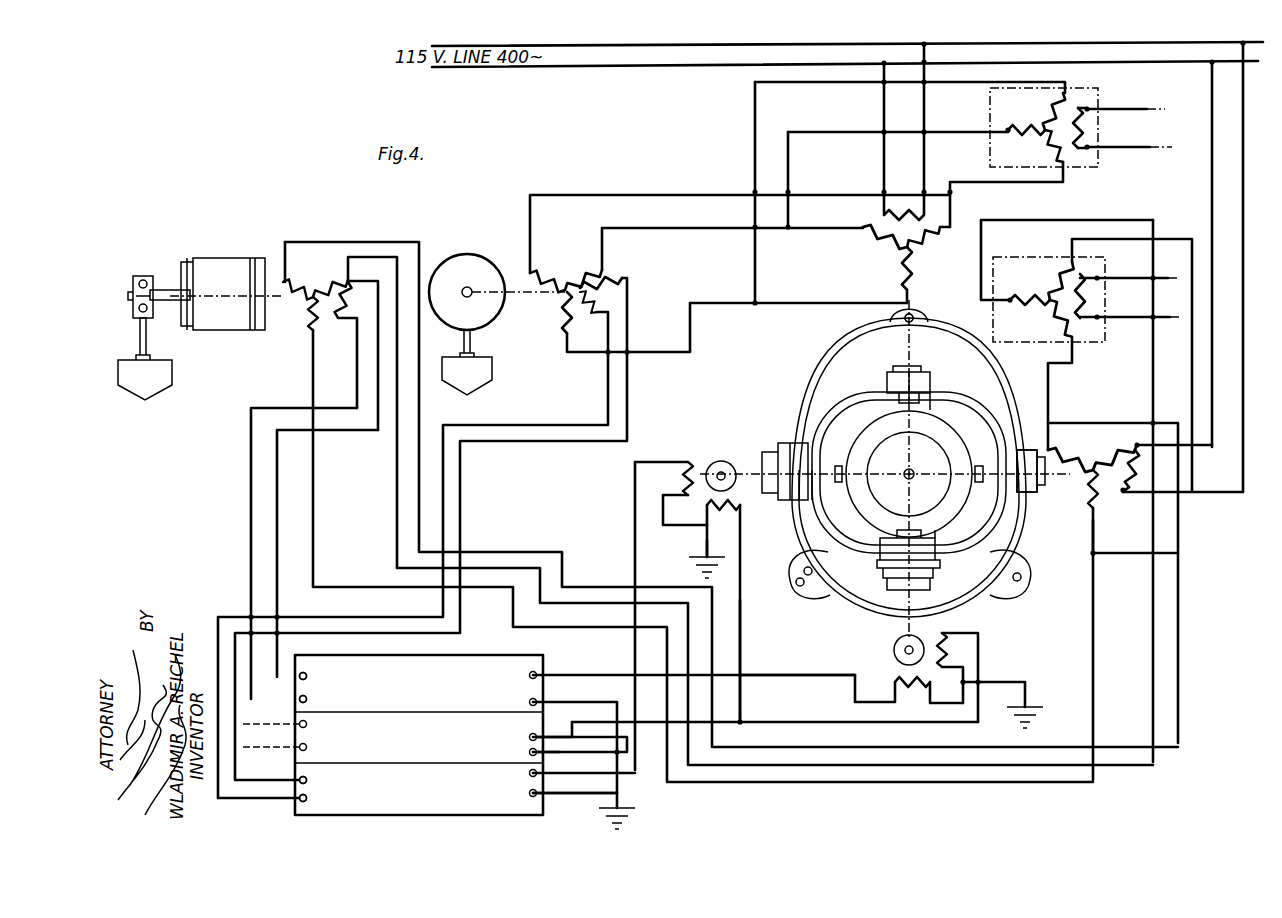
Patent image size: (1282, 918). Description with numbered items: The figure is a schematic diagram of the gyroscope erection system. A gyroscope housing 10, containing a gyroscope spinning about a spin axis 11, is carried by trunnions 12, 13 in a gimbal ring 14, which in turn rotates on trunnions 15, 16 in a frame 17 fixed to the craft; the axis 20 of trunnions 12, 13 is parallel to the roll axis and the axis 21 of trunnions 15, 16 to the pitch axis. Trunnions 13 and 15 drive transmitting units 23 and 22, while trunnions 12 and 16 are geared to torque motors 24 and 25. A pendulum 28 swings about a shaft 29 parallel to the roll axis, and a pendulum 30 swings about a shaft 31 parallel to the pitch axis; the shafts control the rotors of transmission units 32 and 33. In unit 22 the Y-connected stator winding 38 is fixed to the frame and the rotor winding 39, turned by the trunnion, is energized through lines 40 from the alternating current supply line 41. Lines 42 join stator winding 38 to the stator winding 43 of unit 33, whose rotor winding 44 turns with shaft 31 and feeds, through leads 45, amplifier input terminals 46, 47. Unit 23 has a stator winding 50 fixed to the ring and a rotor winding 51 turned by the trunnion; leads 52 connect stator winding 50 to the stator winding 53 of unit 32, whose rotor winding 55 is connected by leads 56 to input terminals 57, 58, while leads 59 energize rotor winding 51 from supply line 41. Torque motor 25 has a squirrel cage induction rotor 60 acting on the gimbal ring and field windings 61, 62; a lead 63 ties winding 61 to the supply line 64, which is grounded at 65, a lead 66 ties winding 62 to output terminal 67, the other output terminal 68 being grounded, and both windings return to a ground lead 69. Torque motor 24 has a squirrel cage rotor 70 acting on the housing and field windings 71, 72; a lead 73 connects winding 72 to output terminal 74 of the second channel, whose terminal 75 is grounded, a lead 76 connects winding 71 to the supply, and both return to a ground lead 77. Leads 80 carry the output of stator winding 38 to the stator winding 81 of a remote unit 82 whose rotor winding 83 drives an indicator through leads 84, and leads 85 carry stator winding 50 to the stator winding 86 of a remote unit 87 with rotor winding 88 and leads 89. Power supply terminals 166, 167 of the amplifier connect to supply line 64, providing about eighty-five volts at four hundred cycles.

The gyroscope housing 10 is at (962, 448).
The spin axis 11 is at (912, 470).
The trunnion 12 is at (930, 535).
The trunnion 13 is at (930, 410).
The gimbal ring 14 is at (858, 392).
The trunnion 15 is at (1022, 490).
The trunnion 16 is at (803, 505).
The frame 17 is at (850, 605).
The axis 20 is at (915, 335).
The axis 21 is at (1077, 537).
The transmitting unit 22 is at (1028, 458).
The transmitting unit 23 is at (897, 372).
The torque motor 24 is at (940, 572).
The torque motor 25 is at (812, 458).
The pendulum 28 is at (492, 372).
The shaft 29 is at (470, 288).
The pendulum 30 is at (165, 372).
The shaft 31 is at (155, 288).
The transmission unit 32 is at (487, 312).
The transmission unit 33 is at (217, 273).
The stator winding 38 is at (1090, 455).
The rotor winding 39 is at (1135, 485).
The lines 40 is at (1212, 418).
The alternating current supply line 41 is at (628, 50).
The lines 42 is at (418, 463).
The stator winding 43 is at (300, 308).
The rotor winding 44 is at (338, 322).
The leads 45 is at (277, 497).
The input terminal 46 is at (308, 676).
The input terminal 47 is at (308, 699).
The stator winding 50 is at (870, 248).
The rotor winding 51 is at (905, 220).
The leads 52 is at (712, 303).
The stator winding 53 is at (549, 270).
The rotor winding 55 is at (605, 305).
The leads 56 is at (540, 427).
The input terminal 57 is at (308, 780).
The input terminal 58 is at (308, 798).
The leads 59 is at (910, 118).
The squirrel cage induction rotor 60 is at (735, 463).
The field winding 61 is at (718, 520).
The field winding 62 is at (682, 482).
The lead 63 is at (742, 634).
The alternating current supply line 64 is at (530, 753).
The ground 65 is at (622, 804).
The lead 66 is at (635, 535).
The output terminal 67 is at (530, 773).
The output terminal 68 is at (530, 794).
The ground lead 69 is at (705, 540).
The squirrel cage rotor 70 is at (922, 637).
The field winding 71 is at (950, 650).
The field winding 72 is at (912, 690).
The lead 73 is at (778, 678).
The output terminal 74 is at (530, 677).
The output terminal 75 is at (532, 705).
The lead 76 is at (945, 725).
The ground lead 77 is at (1030, 700).
The leads 80 is at (1193, 344).
The stator winding 81 is at (1042, 296).
The transmission unit 82 is at (1025, 343).
The rotor winding 83 is at (1095, 277).
The leads 84 is at (1112, 292).
The leads 85 is at (960, 177).
The stator winding 86 is at (1043, 108).
The transmission unit 87 is at (985, 153).
The rotor winding 88 is at (1090, 108).
The leads 89 is at (1120, 110).
The power supply terminal 166 is at (525, 754).
The power supply terminal 167 is at (530, 737).